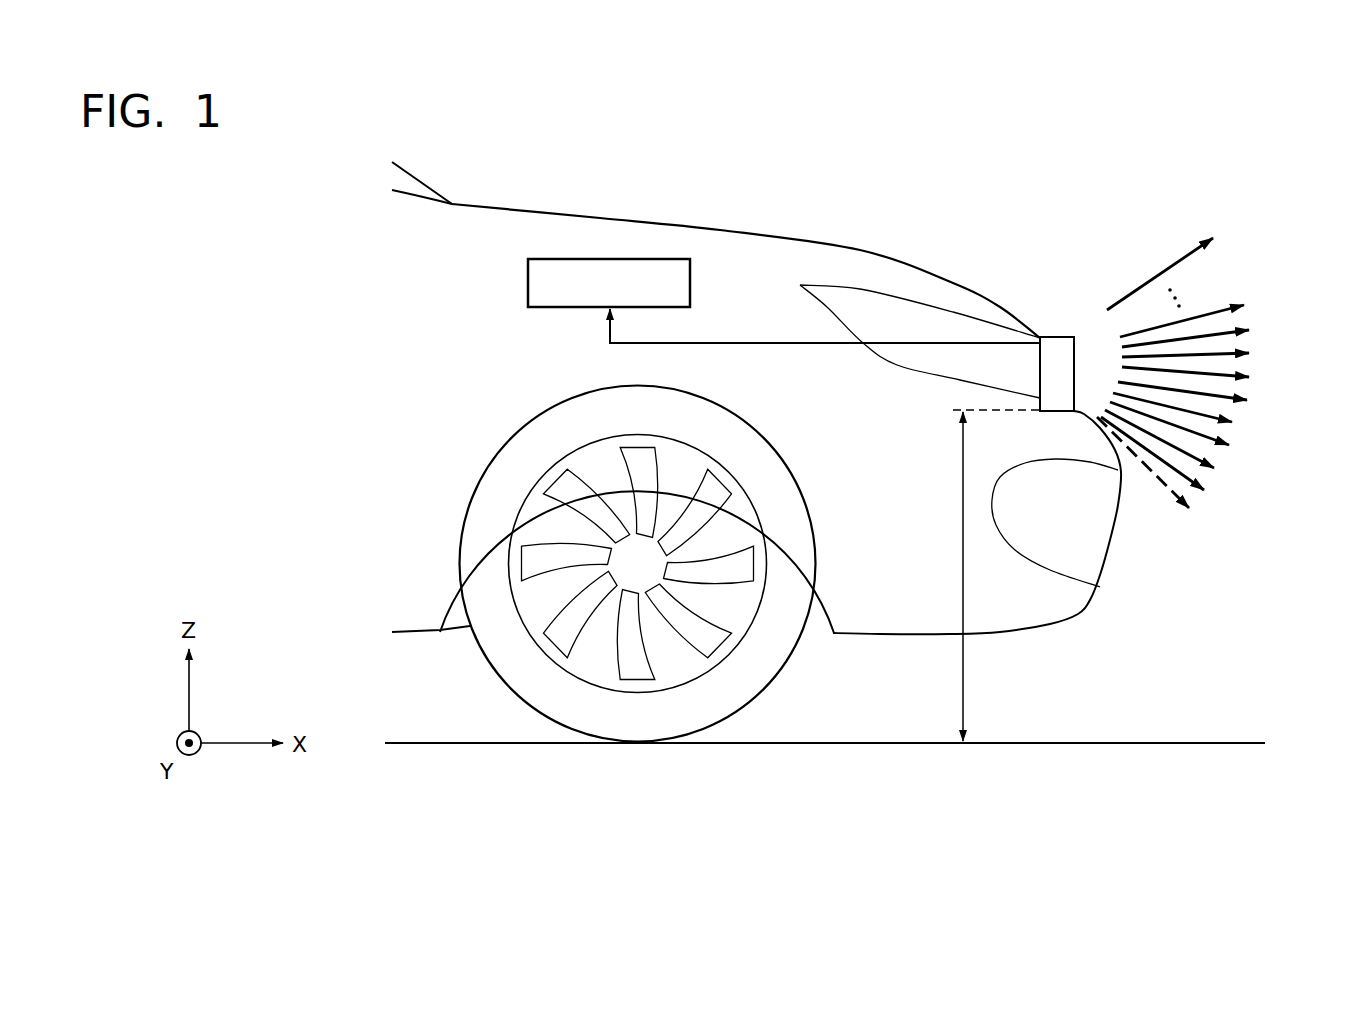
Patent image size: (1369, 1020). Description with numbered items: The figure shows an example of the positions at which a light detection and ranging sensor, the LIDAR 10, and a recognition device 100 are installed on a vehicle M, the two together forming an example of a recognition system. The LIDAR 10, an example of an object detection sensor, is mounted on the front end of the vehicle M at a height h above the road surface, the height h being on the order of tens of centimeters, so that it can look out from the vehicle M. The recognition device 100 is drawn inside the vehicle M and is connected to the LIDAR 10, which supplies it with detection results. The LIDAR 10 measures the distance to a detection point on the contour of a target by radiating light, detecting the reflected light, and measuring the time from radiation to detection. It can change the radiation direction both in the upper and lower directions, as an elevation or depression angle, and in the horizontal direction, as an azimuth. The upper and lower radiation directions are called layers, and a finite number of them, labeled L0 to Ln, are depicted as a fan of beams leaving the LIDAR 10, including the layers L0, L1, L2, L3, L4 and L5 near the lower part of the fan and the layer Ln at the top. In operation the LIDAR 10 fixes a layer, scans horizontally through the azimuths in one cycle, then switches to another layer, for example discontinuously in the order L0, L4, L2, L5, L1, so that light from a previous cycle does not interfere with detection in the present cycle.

The vehicle M is at (740, 228).
The LIDAR 10 is at (1054, 336).
The recognition device 100 is at (527, 284).
The height h is at (987, 575).
The layer Ln is at (1162, 272).
The layer L5 is at (1222, 395).
The layer L4 is at (1214, 413).
The layer L3 is at (1208, 433).
The layer L2 is at (1200, 455).
The layer L1 is at (1186, 477).
The layer L0 is at (1167, 483).